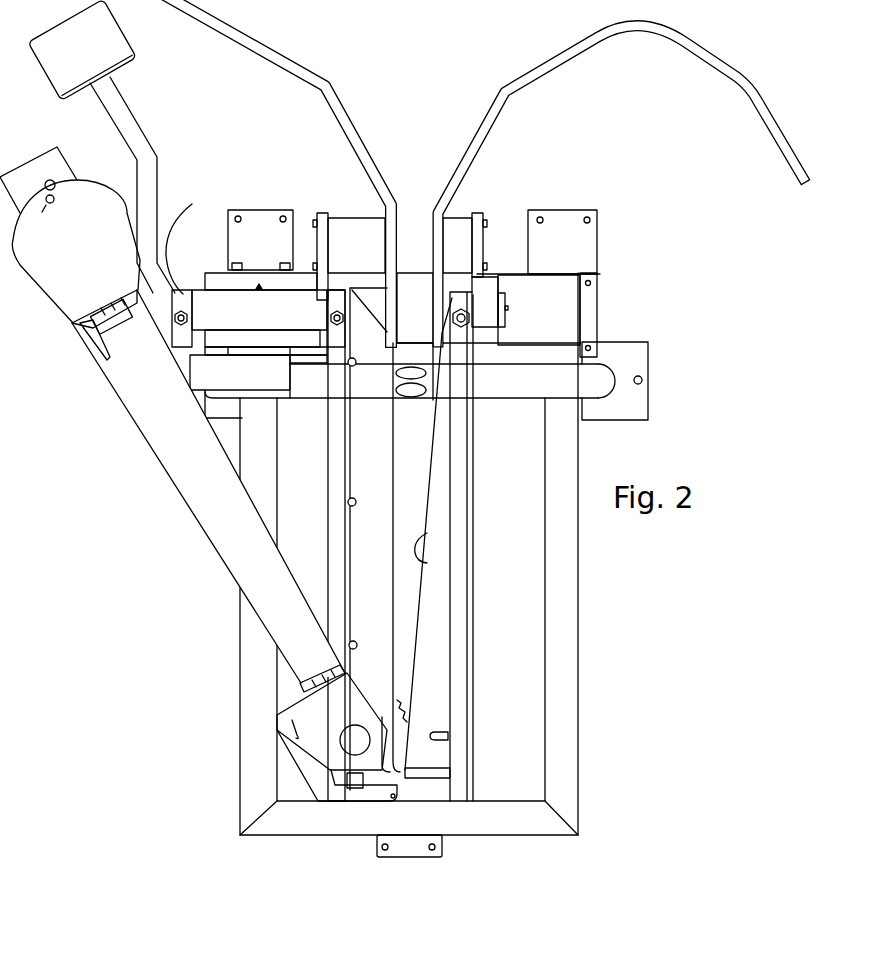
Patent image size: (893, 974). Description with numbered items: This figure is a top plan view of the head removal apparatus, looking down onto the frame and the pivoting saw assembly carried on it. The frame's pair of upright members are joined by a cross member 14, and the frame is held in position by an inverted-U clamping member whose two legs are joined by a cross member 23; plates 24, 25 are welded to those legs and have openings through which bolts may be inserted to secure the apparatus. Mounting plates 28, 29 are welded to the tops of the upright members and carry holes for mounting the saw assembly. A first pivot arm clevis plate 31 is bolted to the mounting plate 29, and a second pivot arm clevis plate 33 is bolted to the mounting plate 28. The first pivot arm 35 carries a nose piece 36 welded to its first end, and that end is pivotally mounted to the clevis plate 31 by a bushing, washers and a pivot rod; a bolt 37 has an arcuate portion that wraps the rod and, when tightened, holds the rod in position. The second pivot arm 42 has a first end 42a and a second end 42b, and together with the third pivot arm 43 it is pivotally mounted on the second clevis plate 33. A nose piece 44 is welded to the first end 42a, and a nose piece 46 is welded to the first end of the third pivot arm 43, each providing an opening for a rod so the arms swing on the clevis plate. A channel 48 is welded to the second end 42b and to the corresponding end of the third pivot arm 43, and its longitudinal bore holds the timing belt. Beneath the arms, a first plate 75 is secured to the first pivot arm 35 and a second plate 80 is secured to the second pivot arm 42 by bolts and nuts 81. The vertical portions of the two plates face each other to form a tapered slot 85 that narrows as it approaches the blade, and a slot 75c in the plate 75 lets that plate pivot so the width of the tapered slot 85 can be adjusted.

The cross member 14 is at (423, 322).
The cross member 23 is at (310, 392).
The plate 24 is at (217, 422).
The plate 25 is at (646, 362).
The mounting plate 28 is at (215, 273).
The mounting plate 29 is at (567, 315).
The first pivot arm clevis plate 31 is at (485, 287).
The second pivot arm clevis plate 33 is at (266, 323).
The first pivot arm 35 is at (457, 462).
The nose piece 36 is at (461, 302).
The bolt 37 is at (463, 313).
The second pivot arm 42 is at (333, 490).
The first end 42a is at (346, 353).
The second end 42b is at (334, 636).
The third pivot arm 43 is at (182, 368).
The nose piece 44 is at (337, 277).
The nose piece 46 is at (192, 204).
The channel 48 is at (220, 522).
The first plate 75 is at (437, 655).
The slot 75c is at (450, 727).
The plate 80 is at (375, 605).
The bolts and nuts 81 is at (354, 500).
The tapered slot 85 is at (425, 540).